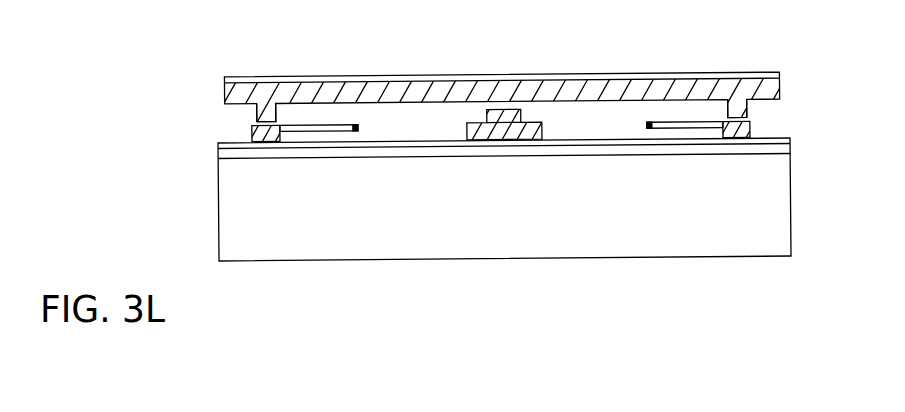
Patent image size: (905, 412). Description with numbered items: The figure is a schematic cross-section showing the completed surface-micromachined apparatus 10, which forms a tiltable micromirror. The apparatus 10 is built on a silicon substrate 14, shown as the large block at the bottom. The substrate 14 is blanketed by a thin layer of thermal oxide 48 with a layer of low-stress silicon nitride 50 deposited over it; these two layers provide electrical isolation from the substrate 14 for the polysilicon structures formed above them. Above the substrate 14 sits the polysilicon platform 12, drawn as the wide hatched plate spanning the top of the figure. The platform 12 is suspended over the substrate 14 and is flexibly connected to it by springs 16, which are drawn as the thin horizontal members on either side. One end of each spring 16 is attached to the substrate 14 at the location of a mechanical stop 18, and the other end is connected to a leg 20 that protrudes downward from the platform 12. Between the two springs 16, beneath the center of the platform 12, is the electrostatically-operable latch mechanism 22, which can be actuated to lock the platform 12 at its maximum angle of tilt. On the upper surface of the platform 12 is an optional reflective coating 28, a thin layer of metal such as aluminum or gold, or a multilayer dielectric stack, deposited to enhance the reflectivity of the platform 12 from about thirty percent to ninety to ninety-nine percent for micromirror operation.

The apparatus 10 is at (724, 274).
The platform 12 is at (368, 80).
The substrate 14 is at (747, 220).
The springs 16 is at (308, 133).
The mechanical stop 18 is at (252, 137).
The leg 20 is at (260, 118).
The latch mechanism 22 is at (478, 115).
The reflective coating 28 is at (300, 77).
The thermal oxide layer 48 is at (217, 155).
The silicon nitride layer 50 is at (217, 146).